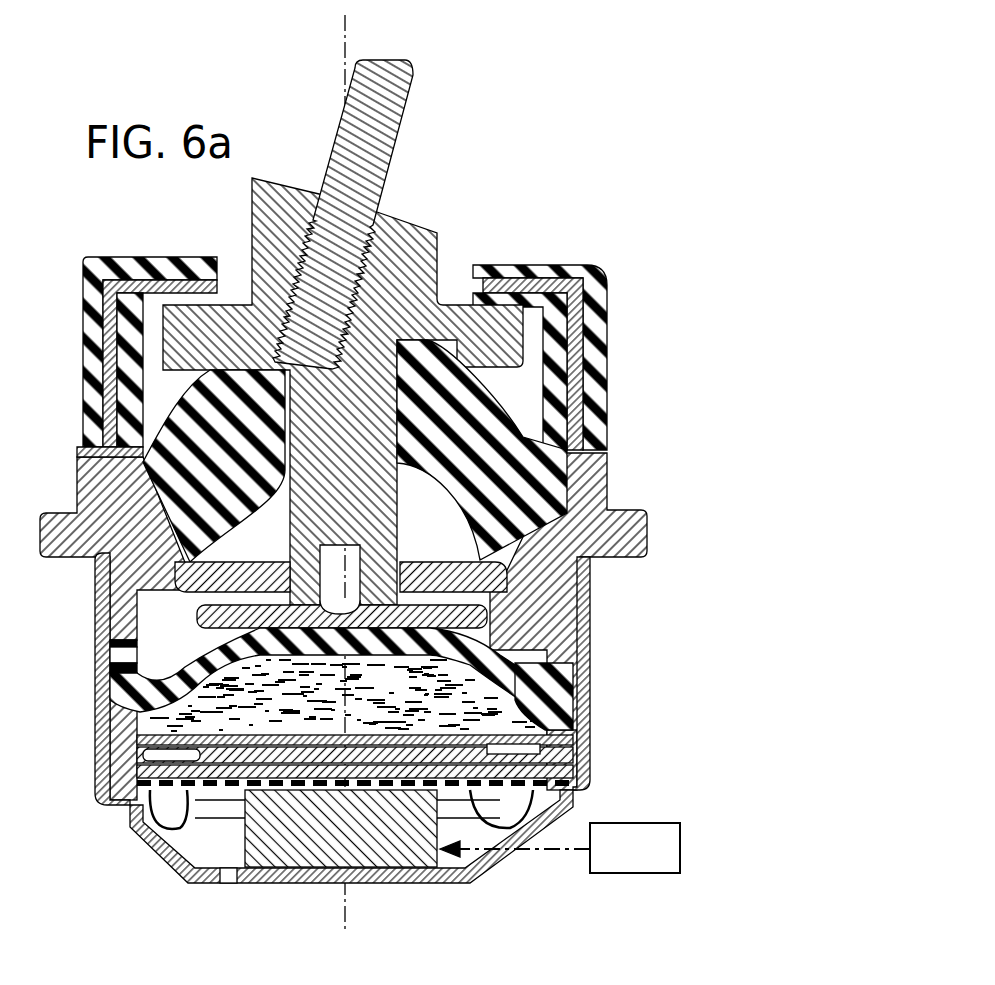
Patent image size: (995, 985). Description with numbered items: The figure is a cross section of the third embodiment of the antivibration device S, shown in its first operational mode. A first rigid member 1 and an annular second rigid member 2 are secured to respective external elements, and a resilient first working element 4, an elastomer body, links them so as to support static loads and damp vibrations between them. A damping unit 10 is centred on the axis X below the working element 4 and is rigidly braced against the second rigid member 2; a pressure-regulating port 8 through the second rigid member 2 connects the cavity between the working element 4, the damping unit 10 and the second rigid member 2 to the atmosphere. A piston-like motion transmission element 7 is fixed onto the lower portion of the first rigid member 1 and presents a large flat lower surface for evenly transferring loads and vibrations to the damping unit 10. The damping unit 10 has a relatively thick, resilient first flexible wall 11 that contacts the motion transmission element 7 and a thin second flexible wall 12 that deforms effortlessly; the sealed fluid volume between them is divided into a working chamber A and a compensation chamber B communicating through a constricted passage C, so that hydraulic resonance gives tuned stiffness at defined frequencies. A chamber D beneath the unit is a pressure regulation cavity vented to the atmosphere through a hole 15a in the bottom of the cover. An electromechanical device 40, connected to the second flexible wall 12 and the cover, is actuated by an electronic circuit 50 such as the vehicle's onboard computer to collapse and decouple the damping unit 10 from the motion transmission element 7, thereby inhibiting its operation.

The first rigid member 1 is at (405, 245).
The second rigid member 2 is at (572, 530).
The resilient first working element 4 is at (483, 405).
The motion transmission element 7 is at (197, 611).
The pressure-regulating port 8 is at (120, 655).
The damping unit 10 is at (520, 668).
The first flexible wall 11 is at (535, 700).
The second flexible wall 12 is at (190, 845).
The port 15a is at (230, 884).
The electromechanical device 40 is at (387, 853).
The electronic circuit 50 is at (633, 877).
The working chamber A is at (343, 695).
The compensation chamber B is at (485, 804).
The constricted passage C is at (517, 753).
The chamber D is at (229, 860).
The antivibration device S is at (500, 115).
The axis X is at (341, 37).